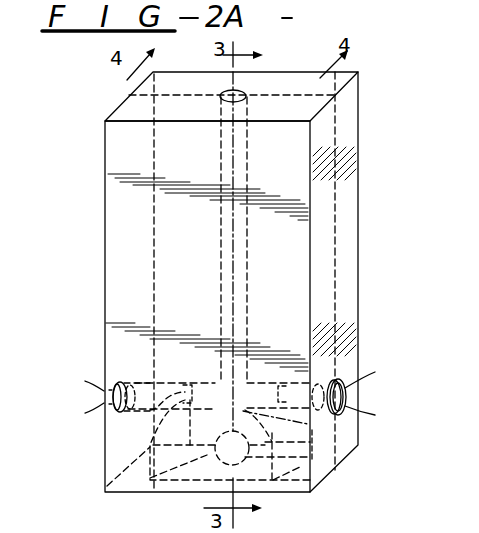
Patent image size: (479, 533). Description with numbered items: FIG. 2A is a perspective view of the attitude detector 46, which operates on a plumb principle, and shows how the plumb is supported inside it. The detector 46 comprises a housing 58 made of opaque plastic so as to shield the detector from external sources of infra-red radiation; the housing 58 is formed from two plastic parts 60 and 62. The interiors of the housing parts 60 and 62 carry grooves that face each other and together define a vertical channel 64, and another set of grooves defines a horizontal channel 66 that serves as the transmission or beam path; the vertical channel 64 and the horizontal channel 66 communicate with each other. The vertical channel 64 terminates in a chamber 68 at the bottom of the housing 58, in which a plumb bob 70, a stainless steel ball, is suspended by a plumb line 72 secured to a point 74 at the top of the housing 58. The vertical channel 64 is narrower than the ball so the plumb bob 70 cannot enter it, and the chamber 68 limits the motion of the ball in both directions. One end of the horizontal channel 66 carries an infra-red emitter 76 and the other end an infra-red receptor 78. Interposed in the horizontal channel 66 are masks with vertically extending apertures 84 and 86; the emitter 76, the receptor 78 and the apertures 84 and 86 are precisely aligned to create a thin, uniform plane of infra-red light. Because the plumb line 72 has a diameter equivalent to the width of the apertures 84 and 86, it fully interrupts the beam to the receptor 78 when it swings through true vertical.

The detector 46 is at (384, 161).
The housing 58 is at (369, 128).
The housing part 60 is at (350, 231).
The housing part 62 is at (105, 302).
The vertical channel 64 is at (220, 244).
The horizontal channel 66 is at (172, 378).
The chamber 68 is at (197, 469).
The plumb bob 70 is at (221, 459).
The plumb line 72 is at (240, 268).
The point 74 is at (233, 96).
The infra-red emitter 76 is at (348, 398).
The infra-red receptor 78 is at (98, 397).
The aperture 84 is at (175, 396).
The aperture 86 is at (290, 380).